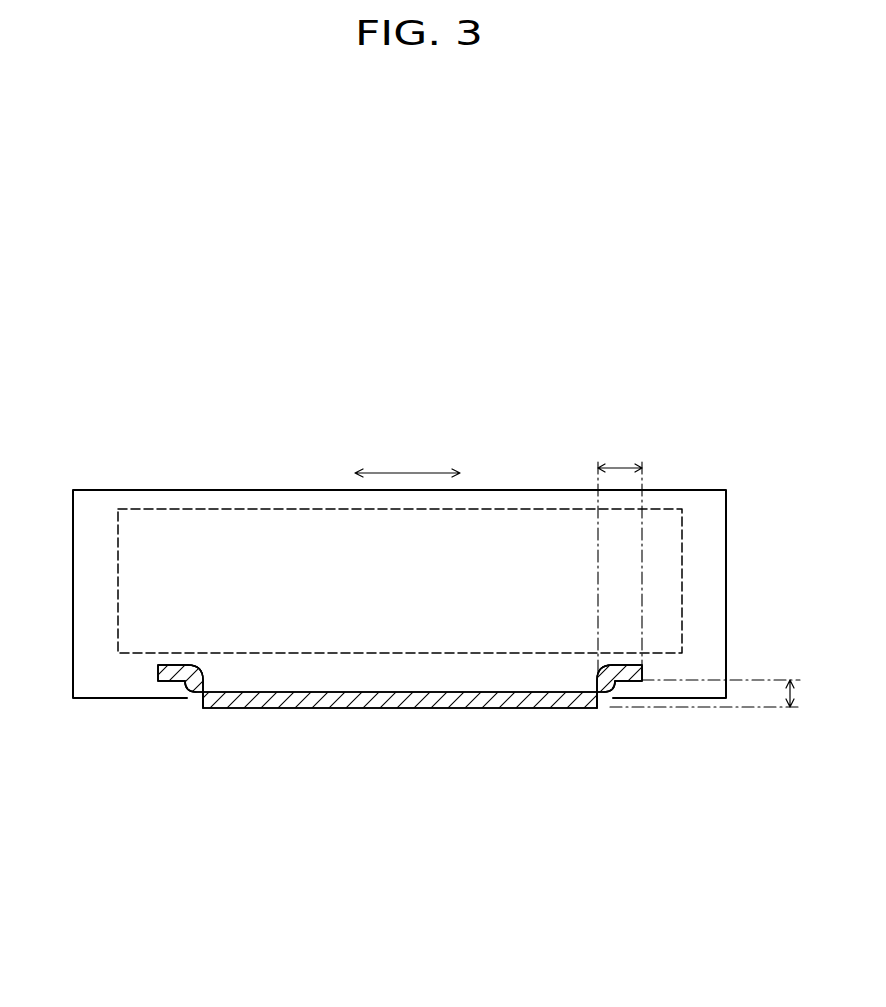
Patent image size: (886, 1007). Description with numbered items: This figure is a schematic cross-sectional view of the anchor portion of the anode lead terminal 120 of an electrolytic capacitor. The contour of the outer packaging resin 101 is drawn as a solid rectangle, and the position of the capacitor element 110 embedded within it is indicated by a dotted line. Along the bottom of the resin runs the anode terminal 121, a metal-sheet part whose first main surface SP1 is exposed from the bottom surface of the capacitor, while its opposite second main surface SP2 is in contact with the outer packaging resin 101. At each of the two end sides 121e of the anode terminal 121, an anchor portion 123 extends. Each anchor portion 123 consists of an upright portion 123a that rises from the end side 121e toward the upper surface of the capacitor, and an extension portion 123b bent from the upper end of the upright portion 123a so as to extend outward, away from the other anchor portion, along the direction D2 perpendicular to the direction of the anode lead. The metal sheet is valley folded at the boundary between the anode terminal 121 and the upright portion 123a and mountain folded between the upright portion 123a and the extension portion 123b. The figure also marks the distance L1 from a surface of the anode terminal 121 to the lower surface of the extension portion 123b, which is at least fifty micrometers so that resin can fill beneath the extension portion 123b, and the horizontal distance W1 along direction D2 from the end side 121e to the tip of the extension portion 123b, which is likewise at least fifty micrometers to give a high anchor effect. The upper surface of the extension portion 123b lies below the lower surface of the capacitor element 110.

The outer packaging resin 101 is at (726, 523).
The capacitor element 110 is at (228, 508).
The anode lead terminal 120 is at (467, 745).
The anode terminal 121 is at (403, 698).
The end side 121e is at (208, 717).
The anchor portion 123 is at (53, 712).
The upright portion 123a is at (186, 690).
The extension portion 123b is at (158, 672).
The first main surface SP1 is at (272, 709).
The second main surface SP2 is at (307, 692).
The direction D2 is at (407, 460).
The horizontal distance W1 is at (620, 564).
The distance L1 is at (717, 693).